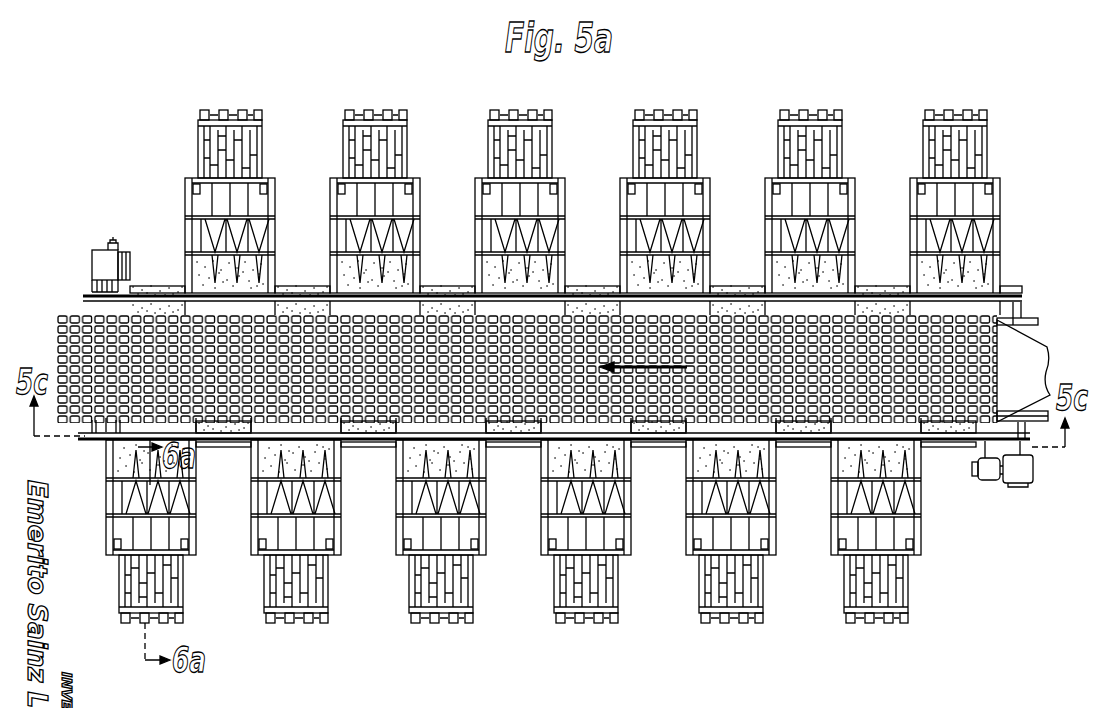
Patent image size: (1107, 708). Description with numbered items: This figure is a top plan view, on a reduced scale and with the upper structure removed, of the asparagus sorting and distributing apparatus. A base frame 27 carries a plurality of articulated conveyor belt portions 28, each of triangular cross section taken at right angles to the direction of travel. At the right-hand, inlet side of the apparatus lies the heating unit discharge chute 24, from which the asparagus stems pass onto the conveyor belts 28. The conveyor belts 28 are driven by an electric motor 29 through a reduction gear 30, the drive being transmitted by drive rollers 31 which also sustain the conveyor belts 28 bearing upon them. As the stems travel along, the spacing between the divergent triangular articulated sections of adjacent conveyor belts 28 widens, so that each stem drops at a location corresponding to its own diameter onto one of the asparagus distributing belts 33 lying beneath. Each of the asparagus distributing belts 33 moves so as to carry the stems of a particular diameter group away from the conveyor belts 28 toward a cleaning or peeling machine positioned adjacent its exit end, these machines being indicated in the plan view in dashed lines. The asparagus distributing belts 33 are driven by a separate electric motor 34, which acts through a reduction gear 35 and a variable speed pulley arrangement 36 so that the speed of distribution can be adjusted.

The heating unit discharge chute 24 is at (1040, 352).
The base frame 27 is at (447, 300).
The articulated conveyor belt portions 28 is at (725, 320).
The electric motor 29 is at (985, 480).
The reduction gear 30 is at (1020, 483).
The drive rollers 31 is at (1030, 318).
The asparagus distributing belts 33 is at (660, 433).
The electric motor 34 is at (130, 268).
The reduction gear 35 is at (97, 268).
The variable speed pulley arrangement 36 is at (128, 243).